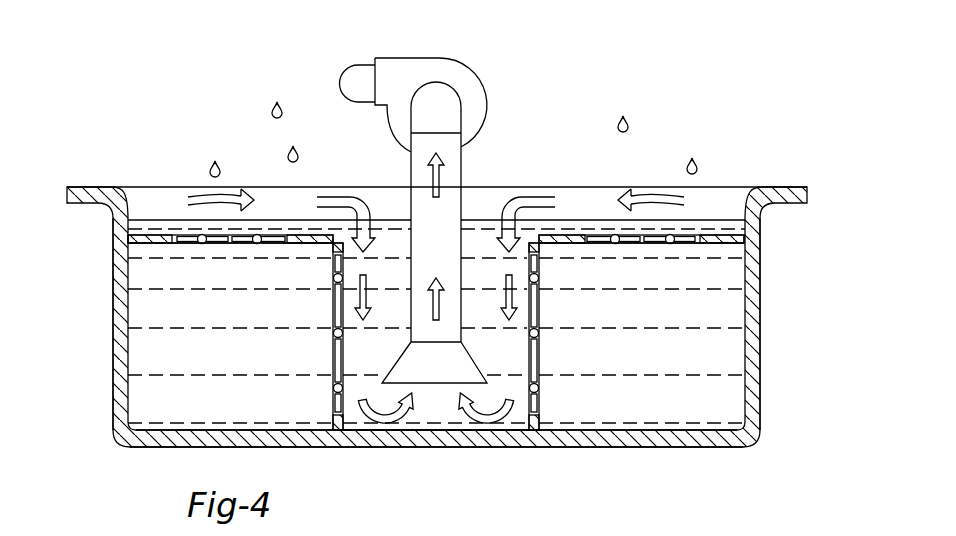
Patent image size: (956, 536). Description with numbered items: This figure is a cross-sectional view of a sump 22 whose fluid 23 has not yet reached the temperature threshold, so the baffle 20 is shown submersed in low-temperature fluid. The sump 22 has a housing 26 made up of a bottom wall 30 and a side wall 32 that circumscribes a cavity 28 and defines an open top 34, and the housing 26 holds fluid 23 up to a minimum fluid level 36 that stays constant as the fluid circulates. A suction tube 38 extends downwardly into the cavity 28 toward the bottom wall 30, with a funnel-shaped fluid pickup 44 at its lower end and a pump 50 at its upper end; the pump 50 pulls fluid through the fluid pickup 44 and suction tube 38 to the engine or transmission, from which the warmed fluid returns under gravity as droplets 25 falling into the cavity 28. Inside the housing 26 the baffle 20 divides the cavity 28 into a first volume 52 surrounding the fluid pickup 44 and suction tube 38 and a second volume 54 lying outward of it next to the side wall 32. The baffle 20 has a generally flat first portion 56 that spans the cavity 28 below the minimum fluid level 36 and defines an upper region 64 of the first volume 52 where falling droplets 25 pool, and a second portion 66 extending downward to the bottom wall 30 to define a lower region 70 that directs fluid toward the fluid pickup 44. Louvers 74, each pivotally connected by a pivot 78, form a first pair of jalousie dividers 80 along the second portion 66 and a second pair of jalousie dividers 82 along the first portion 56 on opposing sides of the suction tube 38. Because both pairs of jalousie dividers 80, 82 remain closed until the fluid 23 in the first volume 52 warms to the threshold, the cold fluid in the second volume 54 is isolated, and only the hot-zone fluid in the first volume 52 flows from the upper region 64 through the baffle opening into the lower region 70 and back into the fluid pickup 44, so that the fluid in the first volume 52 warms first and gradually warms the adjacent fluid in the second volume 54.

The baffle 20 is at (155, 244).
The sump 22 is at (680, 457).
The fluid 23 is at (352, 418).
The droplets 25 is at (287, 157).
The housing 26 is at (145, 450).
The cavity 28 is at (380, 216).
The bottom wall 30 is at (518, 440).
The side wall 32 is at (120, 295).
The open top 34 is at (509, 172).
The minimum fluid level 36 is at (133, 208).
The suction tube 38 is at (429, 250).
The fluid pickup 44 is at (429, 371).
The pump 50 is at (429, 121).
The first volume 52 is at (429, 413).
The second volume 54 is at (181, 358).
The first portion 56 is at (562, 238).
The upper region 64 is at (313, 225).
The second portion 66 is at (540, 420).
The lower region 70 is at (361, 363).
The louvers 74 is at (270, 244).
The pivot 78 is at (202, 244).
The first pair of jalousie dividers 80 is at (327, 342).
The second pair of jalousie dividers 82 is at (236, 256).